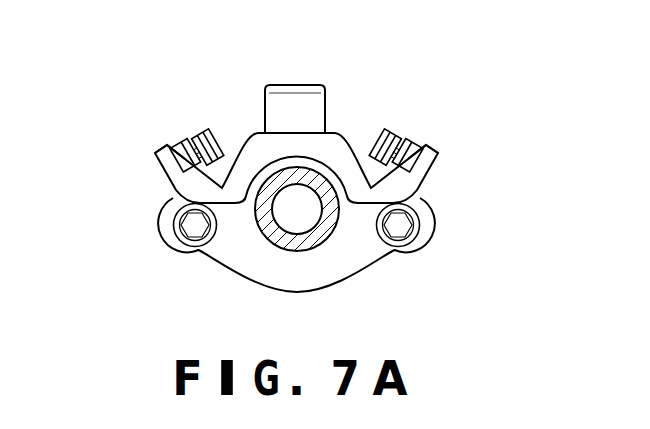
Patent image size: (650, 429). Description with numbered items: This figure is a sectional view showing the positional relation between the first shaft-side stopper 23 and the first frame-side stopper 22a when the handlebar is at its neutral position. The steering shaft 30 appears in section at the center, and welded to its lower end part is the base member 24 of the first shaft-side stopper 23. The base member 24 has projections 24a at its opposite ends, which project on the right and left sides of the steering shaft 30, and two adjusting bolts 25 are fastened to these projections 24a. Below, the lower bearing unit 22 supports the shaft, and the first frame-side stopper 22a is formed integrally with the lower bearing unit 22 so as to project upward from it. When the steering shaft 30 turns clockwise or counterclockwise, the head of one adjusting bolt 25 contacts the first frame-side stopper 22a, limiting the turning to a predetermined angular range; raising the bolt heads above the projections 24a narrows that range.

The lower bearing unit 22 is at (333, 260).
The first frame-side stopper 22a is at (305, 86).
The first shaft-side stopper 23 is at (305, 125).
The base member 24 is at (250, 174).
The projections 24a is at (156, 150).
The adjusting bolts 25 is at (202, 128).
The steering shaft 30 is at (270, 233).